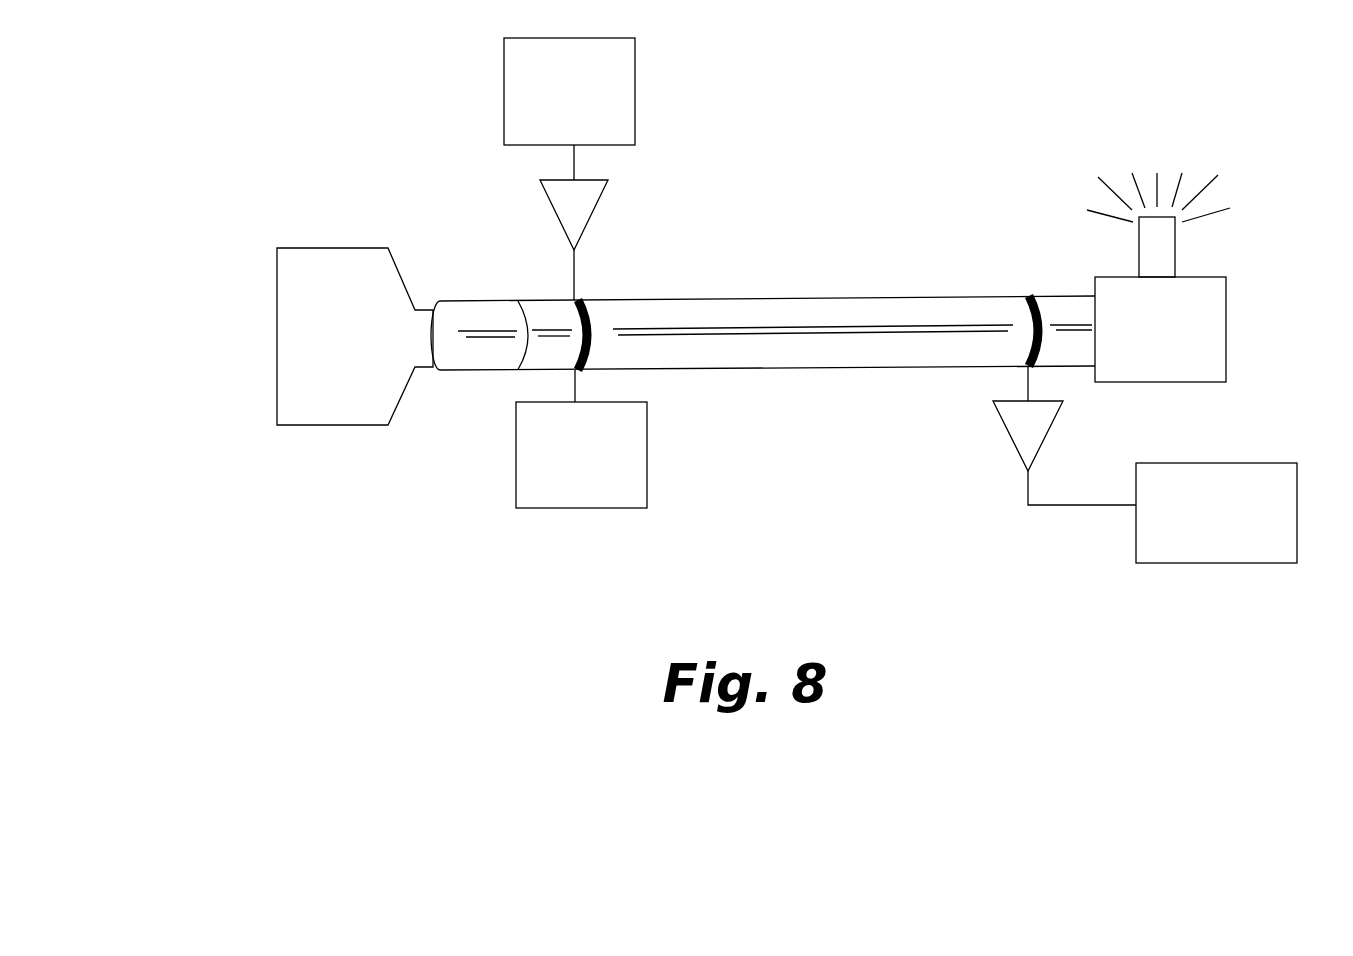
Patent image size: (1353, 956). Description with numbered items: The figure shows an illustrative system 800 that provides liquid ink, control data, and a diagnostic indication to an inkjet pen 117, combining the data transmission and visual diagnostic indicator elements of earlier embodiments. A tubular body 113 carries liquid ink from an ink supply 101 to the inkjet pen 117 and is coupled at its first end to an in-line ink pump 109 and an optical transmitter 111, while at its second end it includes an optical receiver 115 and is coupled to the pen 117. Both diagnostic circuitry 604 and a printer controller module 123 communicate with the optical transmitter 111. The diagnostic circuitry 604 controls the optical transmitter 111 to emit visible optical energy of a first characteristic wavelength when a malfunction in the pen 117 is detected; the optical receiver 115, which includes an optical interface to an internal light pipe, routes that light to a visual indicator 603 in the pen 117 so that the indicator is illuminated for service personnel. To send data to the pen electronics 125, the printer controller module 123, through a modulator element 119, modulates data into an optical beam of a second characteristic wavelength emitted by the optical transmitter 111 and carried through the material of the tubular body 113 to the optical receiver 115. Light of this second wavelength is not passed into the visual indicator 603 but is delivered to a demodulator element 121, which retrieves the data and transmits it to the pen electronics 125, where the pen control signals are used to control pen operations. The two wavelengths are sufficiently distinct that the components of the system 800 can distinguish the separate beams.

The system 800 is at (229, 176).
The ink supply 101 is at (327, 328).
The in-line ink pump 109 is at (545, 321).
The optical transmitter 111 is at (587, 315).
The tubular body 113 is at (768, 312).
The optical receiver 115 is at (1030, 293).
The inkjet pen 117 is at (1171, 368).
The modulator element 119 is at (575, 207).
The demodulator element 121 is at (1022, 432).
The printer controller module 123 is at (589, 132).
The pen electronics 125 is at (1248, 556).
The visual indicator 603 is at (1163, 253).
The diagnostic circuitry 604 is at (599, 502).